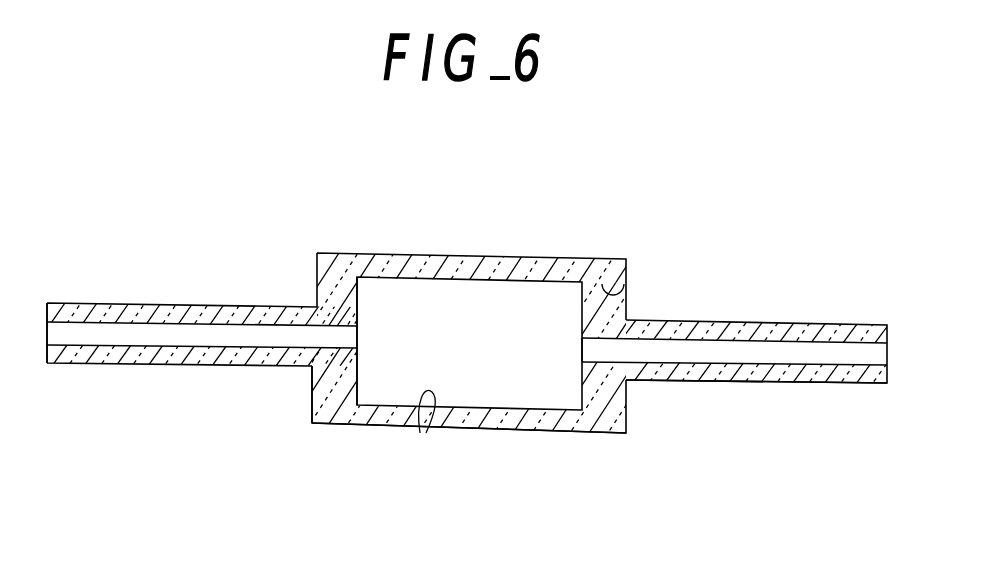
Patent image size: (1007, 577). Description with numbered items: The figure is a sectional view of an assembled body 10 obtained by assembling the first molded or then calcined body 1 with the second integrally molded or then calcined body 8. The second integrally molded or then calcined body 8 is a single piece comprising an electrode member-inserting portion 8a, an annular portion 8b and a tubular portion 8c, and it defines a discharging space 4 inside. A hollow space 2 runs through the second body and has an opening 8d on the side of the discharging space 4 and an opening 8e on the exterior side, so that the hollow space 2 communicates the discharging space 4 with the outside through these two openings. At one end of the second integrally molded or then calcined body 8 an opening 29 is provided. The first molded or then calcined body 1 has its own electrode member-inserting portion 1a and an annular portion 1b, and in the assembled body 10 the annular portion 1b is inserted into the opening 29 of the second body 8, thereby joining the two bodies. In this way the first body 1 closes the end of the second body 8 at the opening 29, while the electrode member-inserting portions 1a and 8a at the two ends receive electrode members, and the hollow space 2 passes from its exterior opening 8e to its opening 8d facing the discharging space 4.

The first molded or then calcined body 1 is at (766, 317).
The electrode member-inserting portion 1a is at (765, 381).
The annular portion 1b is at (617, 393).
The hollow space 2 is at (130, 322).
The discharging space 4 is at (420, 433).
The second integrally molded or then calcined body 8 is at (535, 444).
The electrode member-inserting portion 8a is at (175, 367).
The annular portion 8b is at (323, 383).
The tubular portion 8c is at (468, 427).
The opening of hollow space on discharging space side 8d is at (357, 333).
The opening of hollow space on exterior side 8e is at (50, 317).
The assembled body 10 is at (472, 338).
The opening 29 is at (618, 302).